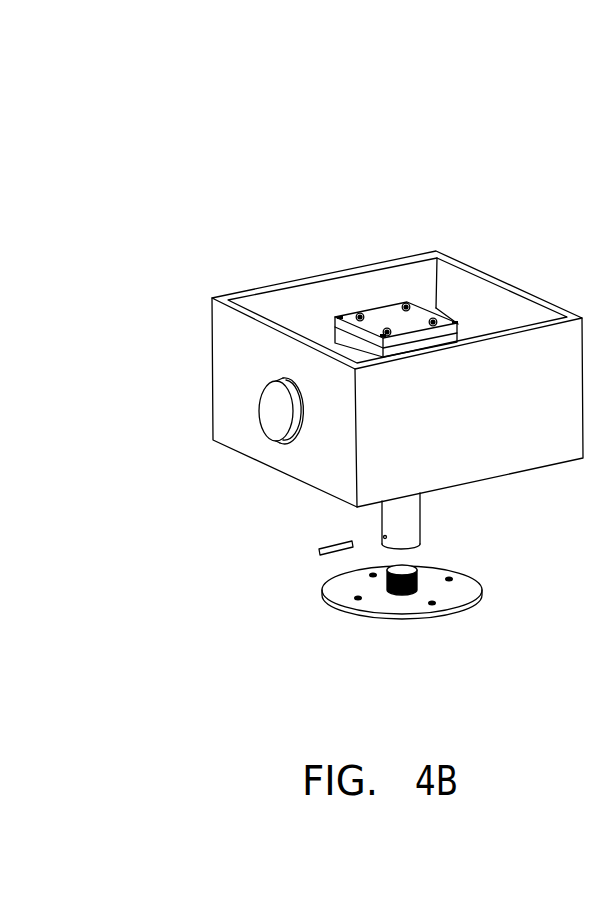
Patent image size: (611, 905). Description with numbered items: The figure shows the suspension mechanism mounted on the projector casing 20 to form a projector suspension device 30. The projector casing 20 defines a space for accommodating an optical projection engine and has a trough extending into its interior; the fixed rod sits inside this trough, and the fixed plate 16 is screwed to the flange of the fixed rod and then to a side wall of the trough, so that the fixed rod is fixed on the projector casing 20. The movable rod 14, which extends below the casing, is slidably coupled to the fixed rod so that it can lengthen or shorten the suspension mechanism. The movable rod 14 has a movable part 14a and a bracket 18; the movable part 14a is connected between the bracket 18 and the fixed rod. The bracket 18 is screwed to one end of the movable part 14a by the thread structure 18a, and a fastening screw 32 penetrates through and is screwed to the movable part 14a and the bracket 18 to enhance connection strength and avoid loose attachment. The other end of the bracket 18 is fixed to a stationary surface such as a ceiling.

The projector suspension device 30 is at (525, 128).
The projector casing 20 is at (284, 281).
The fixed plate 16 is at (378, 308).
The movable rod 14 is at (552, 489).
The movable part 14a is at (423, 521).
The bracket 18 is at (443, 618).
The thread structure 18a is at (418, 571).
The fastening screw 32 is at (338, 545).